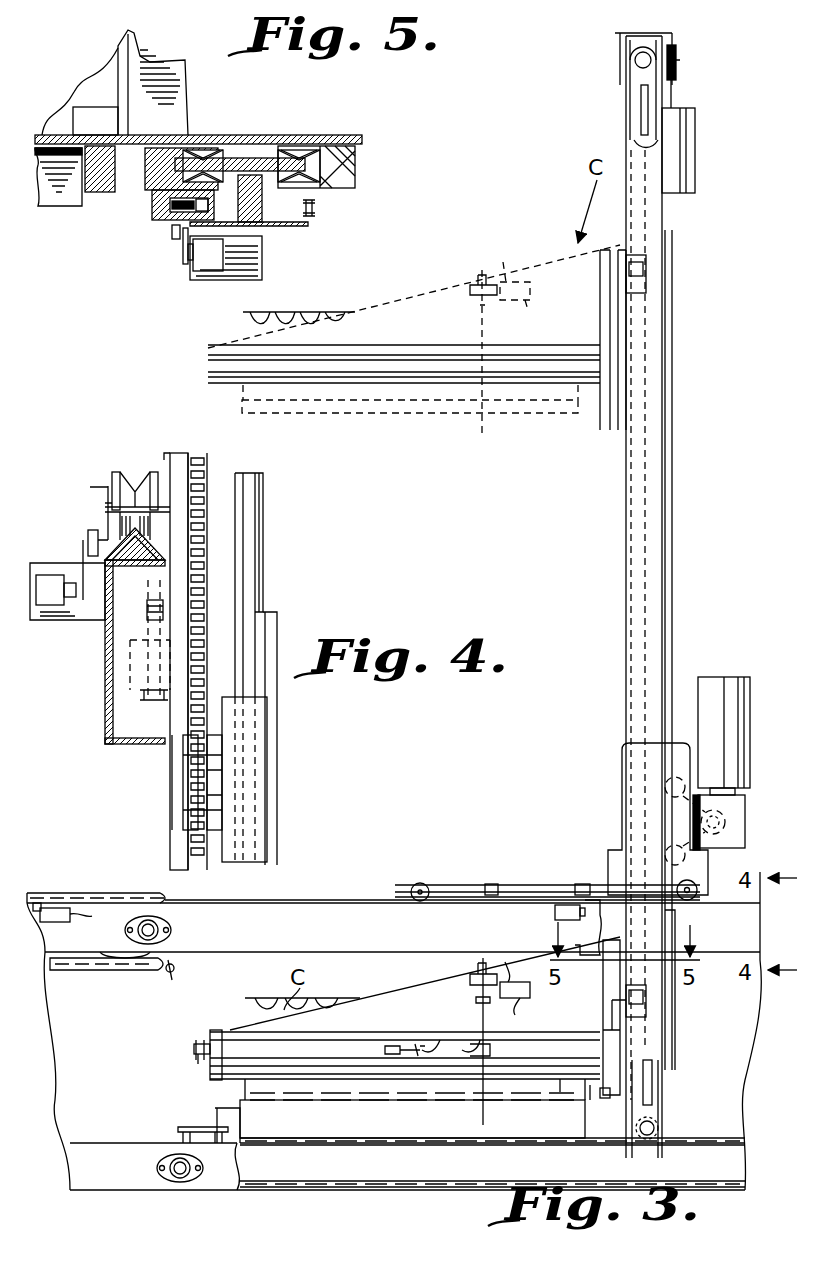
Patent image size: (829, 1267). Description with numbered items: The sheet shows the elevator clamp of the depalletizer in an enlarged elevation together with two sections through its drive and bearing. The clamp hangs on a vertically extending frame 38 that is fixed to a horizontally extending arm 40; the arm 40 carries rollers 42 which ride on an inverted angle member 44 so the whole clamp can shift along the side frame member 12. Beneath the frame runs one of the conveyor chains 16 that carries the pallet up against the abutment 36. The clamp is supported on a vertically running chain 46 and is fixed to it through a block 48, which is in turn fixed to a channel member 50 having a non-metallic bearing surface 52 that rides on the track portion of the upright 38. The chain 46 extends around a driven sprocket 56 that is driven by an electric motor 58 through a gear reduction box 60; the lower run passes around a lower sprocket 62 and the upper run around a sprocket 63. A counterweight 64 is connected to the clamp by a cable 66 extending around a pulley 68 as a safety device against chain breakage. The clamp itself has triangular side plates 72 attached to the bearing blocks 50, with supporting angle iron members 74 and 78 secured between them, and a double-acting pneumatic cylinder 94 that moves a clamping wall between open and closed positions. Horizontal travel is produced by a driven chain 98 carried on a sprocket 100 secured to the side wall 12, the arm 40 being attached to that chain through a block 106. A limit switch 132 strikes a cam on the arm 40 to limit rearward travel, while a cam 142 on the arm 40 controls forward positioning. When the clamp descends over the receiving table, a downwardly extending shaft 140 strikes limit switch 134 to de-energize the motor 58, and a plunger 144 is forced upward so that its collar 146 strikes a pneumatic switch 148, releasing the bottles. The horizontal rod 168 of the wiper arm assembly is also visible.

In FIG. 4, the side frame member 12 is at (104, 718).
In FIG. 3, the side frame member 12 is at (318, 936).
In FIG. 3, the chain 16 is at (738, 1185).
In FIG. 3, the abutment 36 is at (240, 1112).
In FIG. 5, the vertically extending frame 38 is at (280, 128).
In FIG. 4, the vertically extending frame 38 is at (248, 540).
In FIG. 3, the vertically extending frame 38 is at (650, 210).
In FIG. 4, the horizontally extending arm 40 is at (172, 470).
In FIG. 3, the horizontally extending arm 40 is at (548, 882).
In FIG. 4, the roller 42 is at (122, 470).
In FIG. 3, the roller 42 is at (415, 882).
In FIG. 4, the inverted angle member 44 is at (110, 530).
In FIG. 3, the inverted angle member 44 is at (312, 898).
In FIG. 5, the vertically running chain 46 is at (168, 218).
In FIG. 4, the vertically running chain 46 is at (212, 478).
In FIG. 3, the vertically running chain 46 is at (626, 570).
In FIG. 5, the block 48 is at (170, 228).
In FIG. 4, the block 48 is at (224, 786).
In FIG. 5, the channel member 50 is at (142, 190).
In FIG. 4, the channel member 50 is at (260, 738).
In FIG. 5, the non-metallic bearing surface 52 is at (230, 150).
In FIG. 3, the driven sprocket 56 is at (720, 820).
In FIG. 3, the electric motor 58 is at (748, 706).
In FIG. 3, the gear reduction box 60 is at (745, 836).
In FIG. 3, the lower sprocket 62 is at (652, 1126).
In FIG. 3, the sprocket 63 is at (646, 52).
In FIG. 3, the counterweight 64 is at (696, 164).
In FIG. 4, the cable 66 is at (263, 518).
In FIG. 3, the cable 66 is at (674, 468).
In FIG. 3, the pulley 68 is at (676, 48).
In FIG. 5, the side plate 72 is at (58, 130).
In FIG. 4, the side plate 72 is at (278, 645).
In FIG. 3, the side plate 72 is at (370, 310).
In FIG. 5, the supporting angle iron member 74 is at (48, 210).
In FIG. 3, the supporting angle iron member 74 is at (218, 1078).
In FIG. 5, the supporting angle iron member 78 is at (165, 70).
In FIG. 3, the double-acting pneumatic cylinder 94 is at (195, 1046).
In FIG. 4, the driven chain 98 is at (170, 692).
In FIG. 4, the sprocket 100 is at (112, 678).
In FIG. 4, the block 106 is at (125, 615).
In FIG. 4, the limit switch 132 is at (60, 565).
In FIG. 3, the limit switch 132 is at (552, 913).
In FIG. 3, the limit switch 134 is at (62, 922).
In FIG. 3, the downwardly extending shaft 140 is at (605, 1100).
In FIG. 3, the cam 142 is at (490, 883).
In FIG. 3, the plunger 144 is at (480, 430).
In FIG. 3, the collar 146 is at (450, 295).
In FIG. 3, the pneumatic switch 148 is at (508, 270).
In FIG. 3, the horizontal rod 168 is at (176, 980).